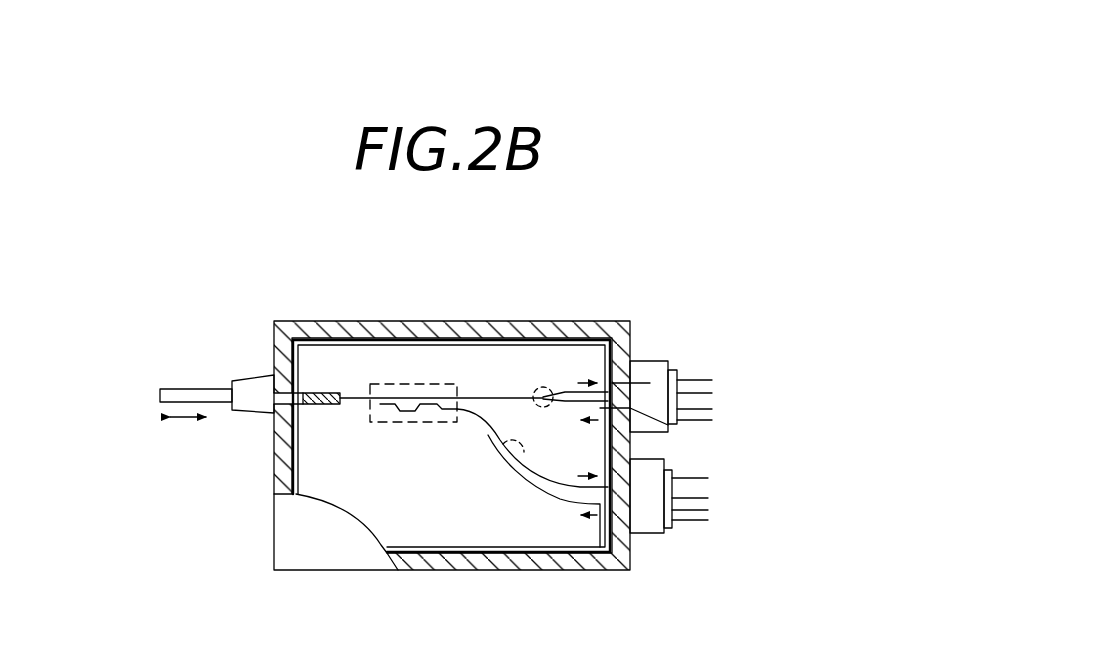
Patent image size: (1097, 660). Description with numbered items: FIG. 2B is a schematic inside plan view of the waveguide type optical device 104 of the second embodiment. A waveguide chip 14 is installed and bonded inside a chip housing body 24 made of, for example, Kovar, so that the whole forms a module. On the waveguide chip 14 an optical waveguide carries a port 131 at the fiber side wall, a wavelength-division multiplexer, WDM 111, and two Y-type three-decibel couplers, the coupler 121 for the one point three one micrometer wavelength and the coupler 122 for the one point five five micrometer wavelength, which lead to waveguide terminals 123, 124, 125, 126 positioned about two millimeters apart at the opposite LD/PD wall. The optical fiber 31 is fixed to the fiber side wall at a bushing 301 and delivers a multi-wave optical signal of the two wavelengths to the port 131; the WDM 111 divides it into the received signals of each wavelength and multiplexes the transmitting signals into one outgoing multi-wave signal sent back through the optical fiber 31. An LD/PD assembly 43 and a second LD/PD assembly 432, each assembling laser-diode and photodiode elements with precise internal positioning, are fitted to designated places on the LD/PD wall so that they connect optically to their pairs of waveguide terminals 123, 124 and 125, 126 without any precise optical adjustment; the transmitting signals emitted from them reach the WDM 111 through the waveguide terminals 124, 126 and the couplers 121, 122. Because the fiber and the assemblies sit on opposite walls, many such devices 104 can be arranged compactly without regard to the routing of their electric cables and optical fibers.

The waveguide type optical device 104 is at (558, 304).
The chip housing body 24 is at (306, 322).
The waveguide chip 14 is at (409, 360).
The port 131 is at (329, 381).
The wavelength-division-multiplexer (WDM) 111 is at (412, 428).
The Y type 3 dB coupler 121 is at (538, 392).
The Y type 3 dB coupler 122 is at (500, 455).
The waveguide terminal 125 is at (600, 487).
The waveguide terminal 126 is at (604, 570).
The LD/PD assembly 43 is at (650, 362).
The waveguide terminal 123 is at (650, 383).
The waveguide terminal 124 is at (668, 425).
The LD/PD assembly 432 is at (650, 459).
The optical fiber 31 is at (164, 388).
The bushing 301 is at (241, 380).